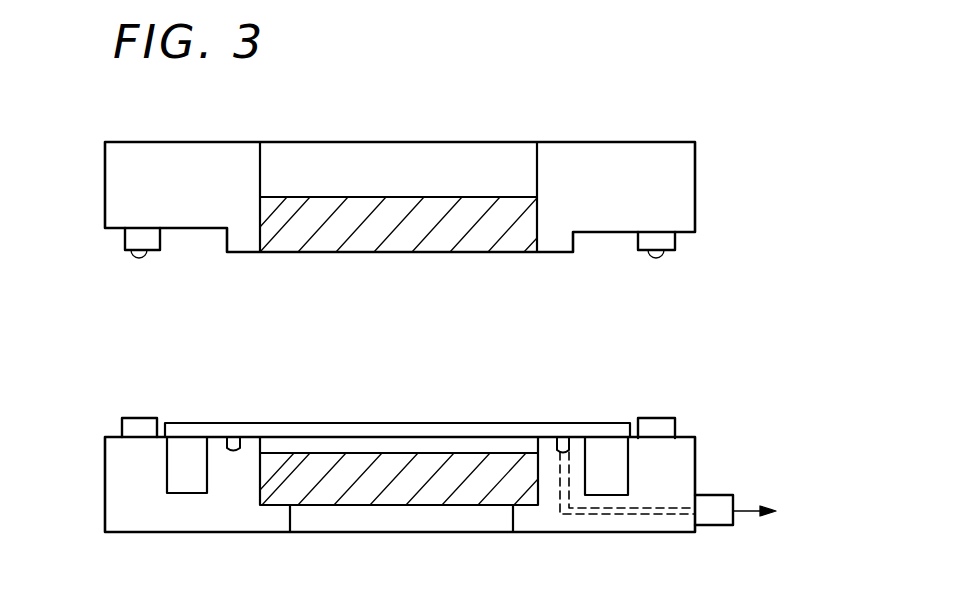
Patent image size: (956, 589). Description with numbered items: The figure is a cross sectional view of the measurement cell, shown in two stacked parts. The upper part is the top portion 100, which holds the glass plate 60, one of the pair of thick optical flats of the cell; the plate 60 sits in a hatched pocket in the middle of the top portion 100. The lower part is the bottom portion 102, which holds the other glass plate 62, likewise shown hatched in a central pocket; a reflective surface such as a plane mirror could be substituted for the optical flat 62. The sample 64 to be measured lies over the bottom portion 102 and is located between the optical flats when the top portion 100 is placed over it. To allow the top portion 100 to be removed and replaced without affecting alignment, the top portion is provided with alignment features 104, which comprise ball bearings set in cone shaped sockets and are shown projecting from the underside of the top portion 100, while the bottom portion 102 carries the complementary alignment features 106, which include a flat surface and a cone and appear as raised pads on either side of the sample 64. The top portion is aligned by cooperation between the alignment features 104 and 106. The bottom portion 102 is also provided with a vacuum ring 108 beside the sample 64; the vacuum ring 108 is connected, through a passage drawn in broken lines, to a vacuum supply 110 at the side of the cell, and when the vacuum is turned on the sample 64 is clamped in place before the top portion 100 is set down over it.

The optical flat 60 is at (433, 212).
The optical flat 62 is at (482, 490).
The sample 64 is at (287, 428).
The top portion 100 is at (632, 170).
The bottom portion 102 is at (680, 472).
The alignment features 104 is at (125, 242).
The alignment features 106 is at (133, 417).
The vacuum ring 108 is at (235, 440).
The vacuum supply 110 is at (761, 510).